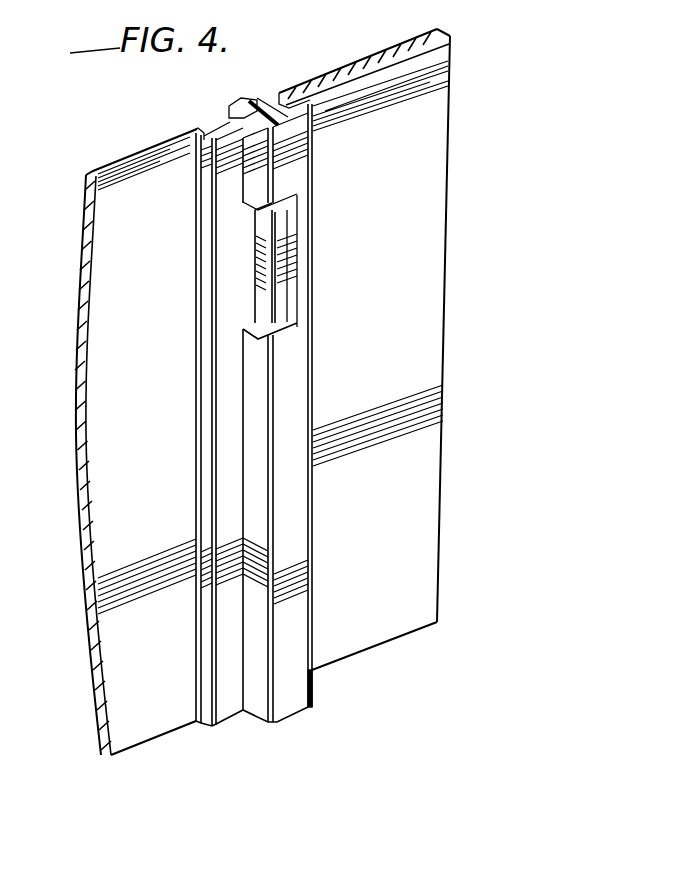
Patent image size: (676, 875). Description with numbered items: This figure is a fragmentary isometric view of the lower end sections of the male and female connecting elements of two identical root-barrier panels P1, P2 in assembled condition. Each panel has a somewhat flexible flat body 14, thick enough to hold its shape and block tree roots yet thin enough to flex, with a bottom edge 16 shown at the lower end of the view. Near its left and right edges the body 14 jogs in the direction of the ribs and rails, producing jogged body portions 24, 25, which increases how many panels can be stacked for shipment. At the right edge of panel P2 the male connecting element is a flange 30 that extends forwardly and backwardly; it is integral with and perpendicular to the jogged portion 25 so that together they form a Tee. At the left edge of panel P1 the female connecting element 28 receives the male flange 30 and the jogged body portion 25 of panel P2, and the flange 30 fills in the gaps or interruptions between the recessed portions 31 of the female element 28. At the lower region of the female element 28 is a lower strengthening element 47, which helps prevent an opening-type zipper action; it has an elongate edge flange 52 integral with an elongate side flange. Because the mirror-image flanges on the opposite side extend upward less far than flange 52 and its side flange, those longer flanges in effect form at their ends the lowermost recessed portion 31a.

The panel body 14 is at (428, 370).
The bottom edge 16 is at (160, 745).
The jogged body portion 24 is at (316, 116).
The jogged body portion 25 is at (225, 602).
The female connecting element 28 is at (323, 585).
The flange 30 is at (280, 277).
The recessed portion 31 is at (298, 187).
The lowermost recessed portion 31a is at (283, 342).
The lower strengthening element 47 is at (300, 498).
The elongate edge flange 52 is at (260, 717).
The panel P1 is at (391, 40).
The panel P2 is at (119, 156).